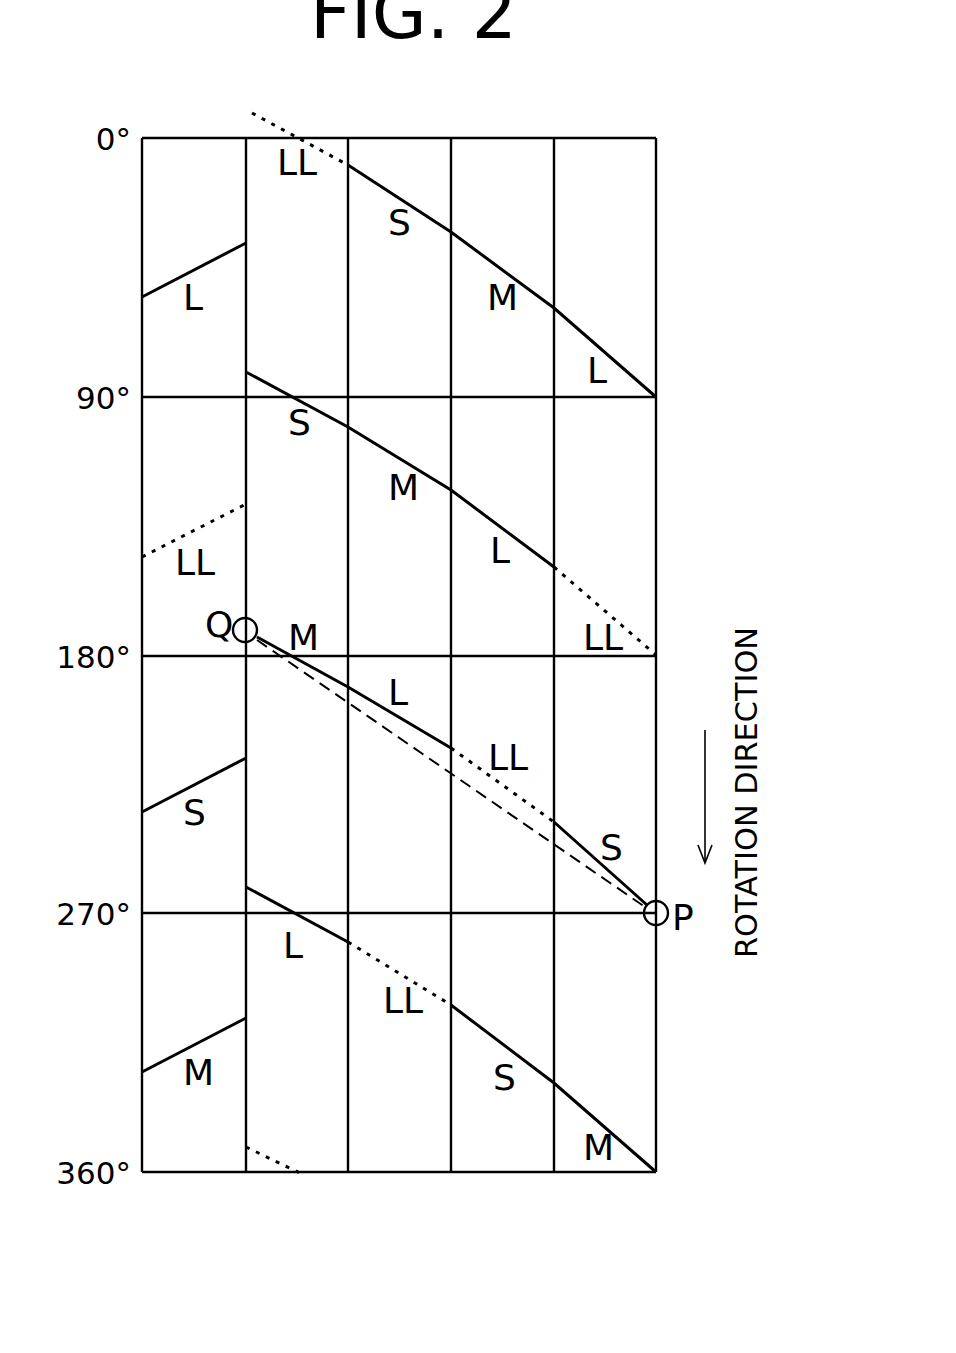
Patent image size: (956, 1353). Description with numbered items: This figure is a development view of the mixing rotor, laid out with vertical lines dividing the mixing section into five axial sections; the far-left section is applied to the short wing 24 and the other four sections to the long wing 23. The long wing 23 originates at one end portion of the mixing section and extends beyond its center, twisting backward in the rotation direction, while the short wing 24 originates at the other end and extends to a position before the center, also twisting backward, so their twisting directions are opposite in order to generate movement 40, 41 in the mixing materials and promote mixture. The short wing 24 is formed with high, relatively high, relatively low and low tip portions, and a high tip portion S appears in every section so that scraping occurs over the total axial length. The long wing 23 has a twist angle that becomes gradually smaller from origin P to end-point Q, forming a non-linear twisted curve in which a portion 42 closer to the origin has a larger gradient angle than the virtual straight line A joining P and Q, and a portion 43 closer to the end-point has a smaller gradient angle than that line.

The long wing 23 is at (296, 1195).
The short wing 24 is at (192, 1195).
The movement 40 is at (488, 1097).
The movement 41 is at (292, 783).
The portion closer to the origin of the long wing 42 is at (646, 1153).
The portion closer to the end-point of the long wing 43 is at (386, 951).